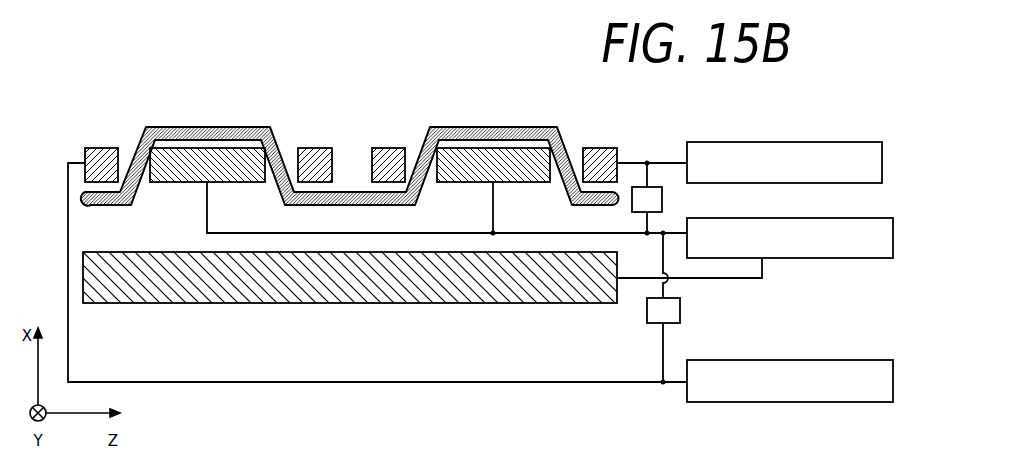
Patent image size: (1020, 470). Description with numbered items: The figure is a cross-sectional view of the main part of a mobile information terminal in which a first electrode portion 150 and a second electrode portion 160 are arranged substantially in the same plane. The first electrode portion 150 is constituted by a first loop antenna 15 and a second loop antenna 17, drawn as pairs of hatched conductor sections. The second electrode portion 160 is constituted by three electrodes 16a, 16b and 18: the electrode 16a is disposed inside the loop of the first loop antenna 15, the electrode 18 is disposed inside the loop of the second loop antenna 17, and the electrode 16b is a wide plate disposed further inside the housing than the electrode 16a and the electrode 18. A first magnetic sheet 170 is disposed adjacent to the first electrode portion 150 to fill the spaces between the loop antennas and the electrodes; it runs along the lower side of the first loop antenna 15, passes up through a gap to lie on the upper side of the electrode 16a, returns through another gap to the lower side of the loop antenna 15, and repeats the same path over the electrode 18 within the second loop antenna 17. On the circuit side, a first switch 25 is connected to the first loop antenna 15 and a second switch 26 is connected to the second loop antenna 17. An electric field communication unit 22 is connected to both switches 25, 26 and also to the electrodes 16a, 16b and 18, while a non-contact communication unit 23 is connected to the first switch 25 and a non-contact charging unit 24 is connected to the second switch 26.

The first loop antenna 15 is at (103, 148).
The second loop antenna 17 is at (597, 148).
The first electrode portion 150 is at (190, 75).
The first magnetic sheet 170 is at (138, 199).
The electrode 16a is at (187, 182).
The electrode 16b is at (328, 303).
The electrode 18 is at (507, 182).
The second electrode portion 160 is at (187, 335).
The electric field communication unit 22 is at (783, 218).
The non-contact communication unit 23 is at (783, 360).
The non-contact charging unit 24 is at (783, 141).
The first switch 25 is at (680, 312).
The second switch 26 is at (662, 200).